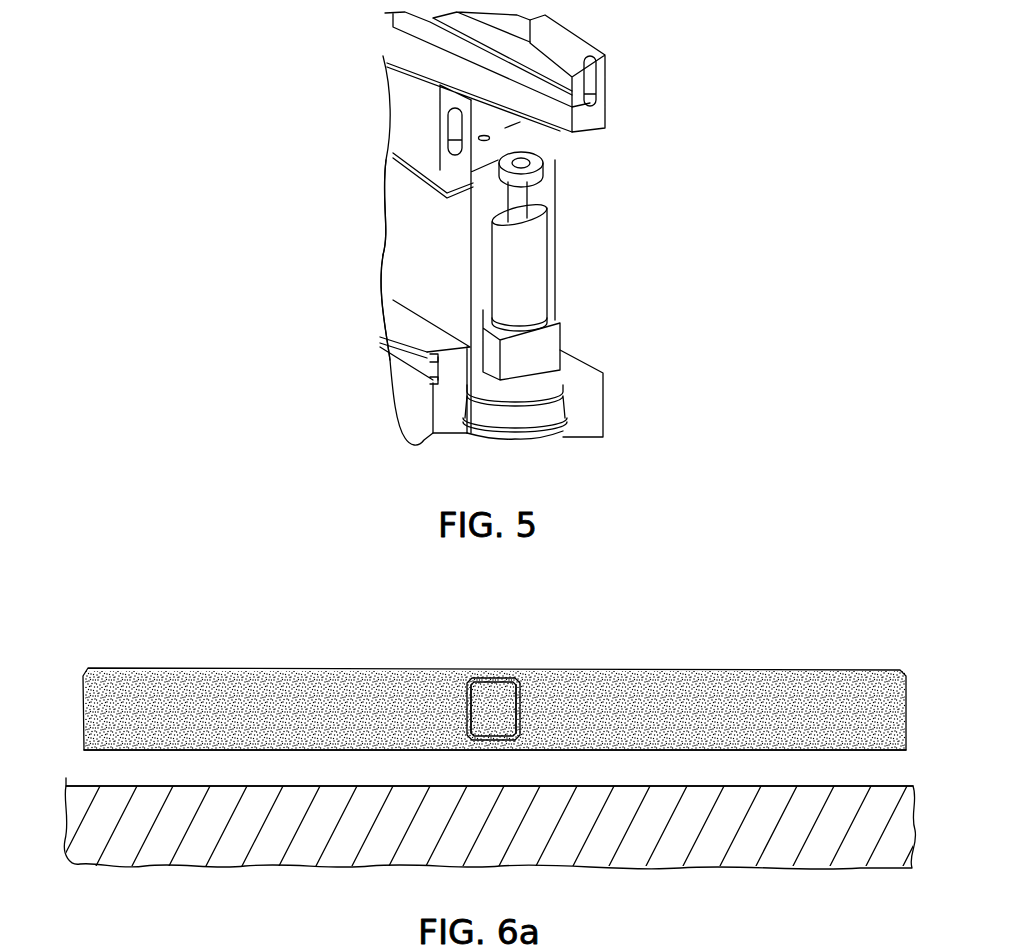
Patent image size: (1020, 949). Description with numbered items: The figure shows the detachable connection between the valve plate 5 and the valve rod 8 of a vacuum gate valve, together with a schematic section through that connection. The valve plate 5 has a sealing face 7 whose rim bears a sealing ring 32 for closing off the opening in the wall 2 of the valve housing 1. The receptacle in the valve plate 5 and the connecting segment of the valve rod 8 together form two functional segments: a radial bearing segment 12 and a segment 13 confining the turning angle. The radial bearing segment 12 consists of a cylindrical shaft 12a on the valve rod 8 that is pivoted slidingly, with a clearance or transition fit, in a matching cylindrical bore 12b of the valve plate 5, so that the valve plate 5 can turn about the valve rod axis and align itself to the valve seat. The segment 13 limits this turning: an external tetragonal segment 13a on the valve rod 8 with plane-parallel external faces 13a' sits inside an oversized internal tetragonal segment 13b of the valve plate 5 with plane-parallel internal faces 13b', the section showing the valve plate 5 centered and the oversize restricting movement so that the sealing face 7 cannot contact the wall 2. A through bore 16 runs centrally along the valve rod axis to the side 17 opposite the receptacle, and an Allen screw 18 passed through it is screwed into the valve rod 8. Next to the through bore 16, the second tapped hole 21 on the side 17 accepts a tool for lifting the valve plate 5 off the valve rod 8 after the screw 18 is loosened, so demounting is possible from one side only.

In FIG. 5, the valve housing 1 is at (396, 103).
In FIG. 6A, the valve housing 1 is at (243, 852).
In FIG. 6A, the wall 2 is at (169, 785).
In FIG. 5, the valve plate 5 is at (410, 248).
In FIG. 6A, the valve plate 5 is at (243, 705).
In FIG. 5, the sealing face 7 is at (393, 208).
In FIG. 6A, the sealing face 7 is at (645, 752).
In FIG. 5, the valve rod 8 is at (563, 425).
In FIG. 6A, the valve rod 8 is at (507, 706).
In FIG. 5, the radial bearing segment 12 is at (580, 207).
In FIG. 5, the cylindrical shaft 12a is at (515, 308).
In FIG. 5, the cylindrical bore 12b is at (480, 292).
In FIG. 5, the segment confining the turning angle 13 is at (580, 310).
In FIG. 6A, the segment confining the turning angle 13 is at (469, 667).
In FIG. 5, the external tetragonal segment 13a is at (513, 423).
In FIG. 5, the plane-parallel external faces 13a' is at (529, 419).
In FIG. 6A, the plane-parallel external faces 13a' is at (451, 684).
In FIG. 5, the internal tetragonal segment 13b is at (383, 360).
In FIG. 6A, the plane-parallel internal faces 13b' is at (512, 683).
In FIG. 5, the through bore 16 is at (527, 197).
In FIG. 5, the side opposite to receptacle 17 is at (506, 139).
In FIG. 5, the screw 18 is at (546, 166).
In FIG. 5, the second tapped hole 21 is at (486, 136).
In FIG. 5, the sealing ring 32 is at (447, 193).